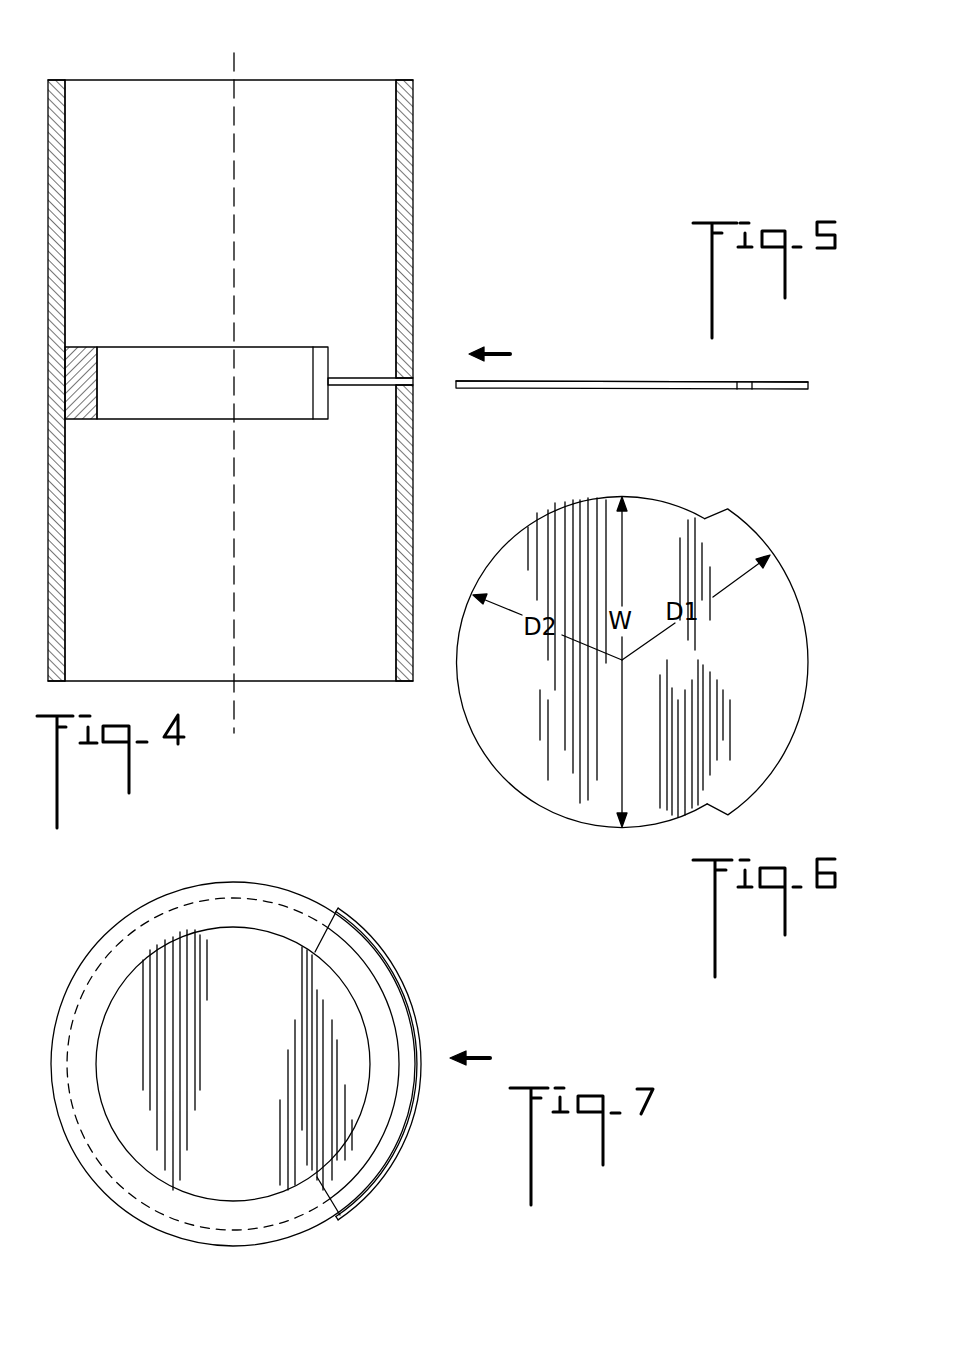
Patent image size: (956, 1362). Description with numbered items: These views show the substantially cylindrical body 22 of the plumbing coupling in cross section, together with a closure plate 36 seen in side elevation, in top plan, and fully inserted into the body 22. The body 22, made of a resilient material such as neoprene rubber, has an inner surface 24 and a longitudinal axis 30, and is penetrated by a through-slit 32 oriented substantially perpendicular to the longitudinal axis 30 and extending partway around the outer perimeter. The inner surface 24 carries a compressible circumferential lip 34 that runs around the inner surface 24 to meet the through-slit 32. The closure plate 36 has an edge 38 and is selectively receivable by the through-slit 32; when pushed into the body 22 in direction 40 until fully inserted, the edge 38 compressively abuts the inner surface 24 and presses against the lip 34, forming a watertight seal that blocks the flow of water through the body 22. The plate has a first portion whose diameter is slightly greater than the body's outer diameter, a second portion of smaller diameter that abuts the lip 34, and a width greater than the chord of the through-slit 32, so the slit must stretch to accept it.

In FIG. 4, the body 22 is at (443, 107).
In FIG. 4, the inner surface 24 is at (136, 210).
In FIG. 7, the inner surface 24 is at (180, 908).
In FIG. 4, the longitudinal axis 30 is at (236, 58).
In FIG. 4, the through-slit 32 is at (375, 387).
In FIG. 4, the compressible circumferential lip 34 is at (253, 366).
In FIG. 7, the compressible circumferential lip 34 is at (130, 955).
In FIG. 5, the closure plate 36 is at (640, 390).
In FIG. 6, the closure plate 36 is at (515, 560).
In FIG. 7, the closure plate 36 is at (280, 1035).
In FIG. 5, the edge 38 is at (566, 382).
In FIG. 6, the edge 38 is at (807, 638).
In FIG. 7, the edge 38 is at (106, 1163).
In FIG. 5, the direction 40 is at (500, 351).
In FIG. 7, the direction 40 is at (473, 1053).